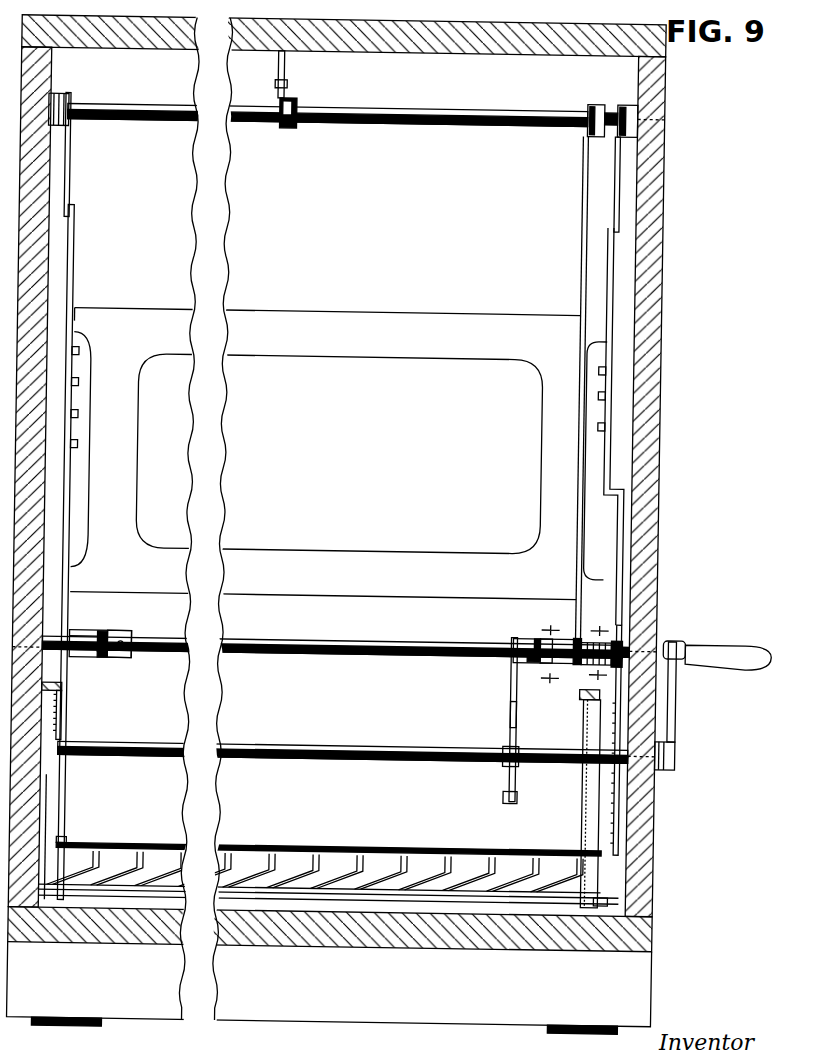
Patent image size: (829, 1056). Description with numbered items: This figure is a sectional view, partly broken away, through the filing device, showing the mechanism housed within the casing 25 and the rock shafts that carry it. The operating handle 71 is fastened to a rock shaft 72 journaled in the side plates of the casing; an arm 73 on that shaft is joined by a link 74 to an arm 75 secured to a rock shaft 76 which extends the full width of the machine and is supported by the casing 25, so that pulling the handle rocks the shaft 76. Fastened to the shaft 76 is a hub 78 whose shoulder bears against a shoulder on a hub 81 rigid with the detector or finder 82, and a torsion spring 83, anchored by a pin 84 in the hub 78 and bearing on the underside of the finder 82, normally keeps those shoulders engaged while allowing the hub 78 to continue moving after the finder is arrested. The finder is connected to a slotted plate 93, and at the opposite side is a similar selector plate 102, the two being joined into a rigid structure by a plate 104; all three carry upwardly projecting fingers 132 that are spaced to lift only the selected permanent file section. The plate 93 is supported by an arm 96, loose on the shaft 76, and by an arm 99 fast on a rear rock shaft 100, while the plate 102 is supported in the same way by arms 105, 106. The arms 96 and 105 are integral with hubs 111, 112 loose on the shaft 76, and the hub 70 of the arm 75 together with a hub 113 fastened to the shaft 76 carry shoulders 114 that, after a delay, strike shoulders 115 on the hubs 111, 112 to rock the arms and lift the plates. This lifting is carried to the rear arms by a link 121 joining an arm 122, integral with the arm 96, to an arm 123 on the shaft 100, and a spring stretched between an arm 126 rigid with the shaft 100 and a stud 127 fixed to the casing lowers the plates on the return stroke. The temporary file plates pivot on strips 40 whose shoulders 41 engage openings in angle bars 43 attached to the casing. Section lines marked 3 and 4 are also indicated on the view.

The casing 25 is at (40, 270).
The rock shaft 100 is at (470, 122).
The stud 127 is at (280, 67).
The arm 126 is at (291, 101).
The arm 123 is at (582, 106).
The arm 99 is at (612, 152).
The link 121 is at (578, 286).
The arm 106 is at (66, 174).
The selector bar or plate 102 is at (70, 517).
The fingers 132 is at (78, 448).
The plate 93 is at (604, 469).
The pin 84 is at (591, 638).
The plate 104 is at (342, 313).
The rock shaft 76 is at (343, 644).
The hub 112 is at (80, 636).
The hub 113 is at (128, 640).
The shoulders 115 is at (104, 640).
The shoulders 114 is at (105, 662).
The arm 105 is at (66, 722).
The hub 70 is at (516, 641).
The hub 111 is at (546, 637).
The section line 3 is at (550, 651).
The section line 4 is at (599, 650).
The arm 122 is at (578, 638).
The hub 78 is at (550, 664).
The torsion spring 83 is at (622, 638).
The hub 81 is at (630, 642).
The arm 96 is at (586, 694).
The detector or finder 82 is at (600, 778).
The arm 75 is at (514, 662).
The link 74 is at (513, 702).
The arm 73 is at (522, 786).
The rock shaft 72 is at (350, 748).
The operating handle 71 is at (679, 693).
The strips 40 is at (67, 848).
The angle bars 43 is at (72, 852).
The shoulders 41 is at (52, 905).